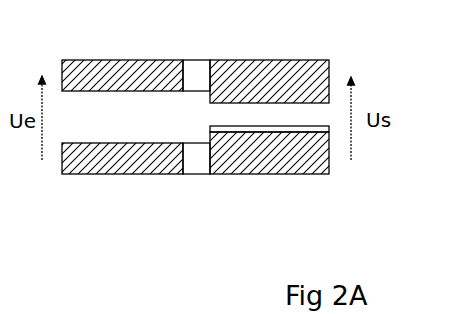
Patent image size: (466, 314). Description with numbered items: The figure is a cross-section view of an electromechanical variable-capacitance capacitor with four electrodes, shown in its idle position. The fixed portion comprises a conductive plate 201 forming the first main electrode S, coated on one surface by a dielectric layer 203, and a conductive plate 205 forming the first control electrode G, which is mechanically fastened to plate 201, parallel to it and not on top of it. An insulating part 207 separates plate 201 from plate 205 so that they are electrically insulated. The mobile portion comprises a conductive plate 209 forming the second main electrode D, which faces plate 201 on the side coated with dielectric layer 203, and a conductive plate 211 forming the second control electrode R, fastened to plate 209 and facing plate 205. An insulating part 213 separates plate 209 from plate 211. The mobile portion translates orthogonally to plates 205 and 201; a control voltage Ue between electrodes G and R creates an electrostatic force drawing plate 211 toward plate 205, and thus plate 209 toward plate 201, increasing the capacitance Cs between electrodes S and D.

The conductive plate 201 is at (283, 160).
The dielectric layer 203 is at (210, 127).
The conductive plate 205 is at (90, 164).
The insulating part 207 is at (192, 160).
The conductive plate 209 is at (283, 72).
The conductive plate 211 is at (128, 72).
The insulating part 213 is at (197, 72).